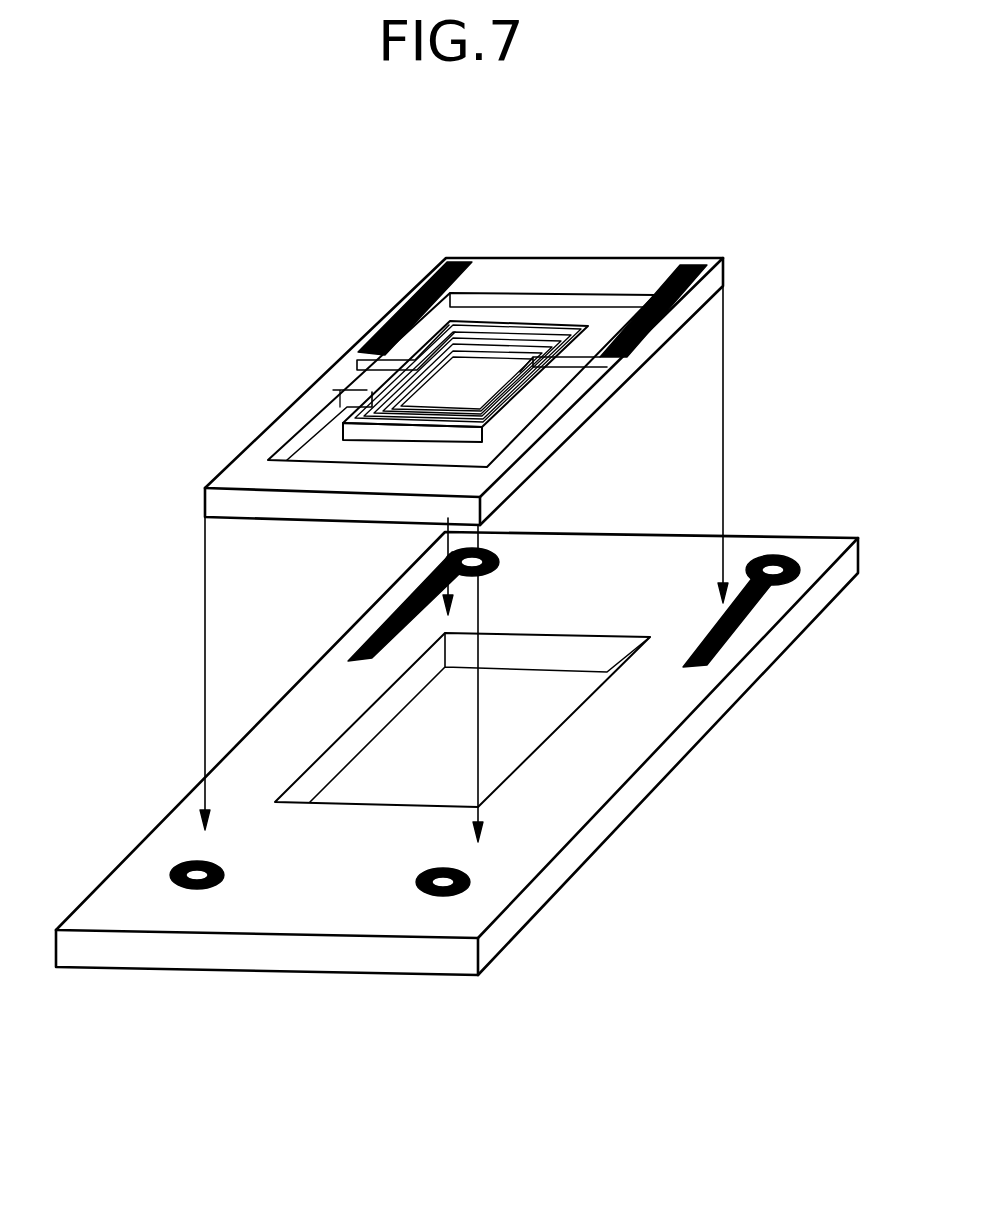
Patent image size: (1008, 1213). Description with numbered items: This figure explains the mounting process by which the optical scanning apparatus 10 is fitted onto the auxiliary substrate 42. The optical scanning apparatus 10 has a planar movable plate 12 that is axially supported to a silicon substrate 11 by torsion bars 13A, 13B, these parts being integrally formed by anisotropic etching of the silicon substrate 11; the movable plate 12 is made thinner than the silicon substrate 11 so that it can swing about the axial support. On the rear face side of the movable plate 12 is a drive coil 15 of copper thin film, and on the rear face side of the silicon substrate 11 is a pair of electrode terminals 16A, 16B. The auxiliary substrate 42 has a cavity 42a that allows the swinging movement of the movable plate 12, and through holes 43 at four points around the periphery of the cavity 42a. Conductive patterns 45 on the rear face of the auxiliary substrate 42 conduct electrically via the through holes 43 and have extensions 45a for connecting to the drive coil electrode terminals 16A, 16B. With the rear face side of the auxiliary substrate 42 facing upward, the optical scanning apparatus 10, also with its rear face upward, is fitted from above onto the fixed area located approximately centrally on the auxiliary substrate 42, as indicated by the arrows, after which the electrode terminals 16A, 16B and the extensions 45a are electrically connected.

The optical scanning apparatus 10 is at (648, 258).
The silicon substrate 11 is at (242, 472).
The movable plate 12 is at (347, 428).
The torsion bar 13A is at (545, 382).
The torsion bar 13B is at (365, 382).
The drive coil 15 is at (510, 330).
The electrode terminal 16A is at (663, 315).
The electrode terminal 16B is at (412, 290).
The auxiliary substrate 42 is at (658, 715).
The cavity 42a is at (550, 653).
The through hole 43 is at (446, 561).
The conductive pattern 45 is at (485, 557).
The extension 45a is at (387, 613).